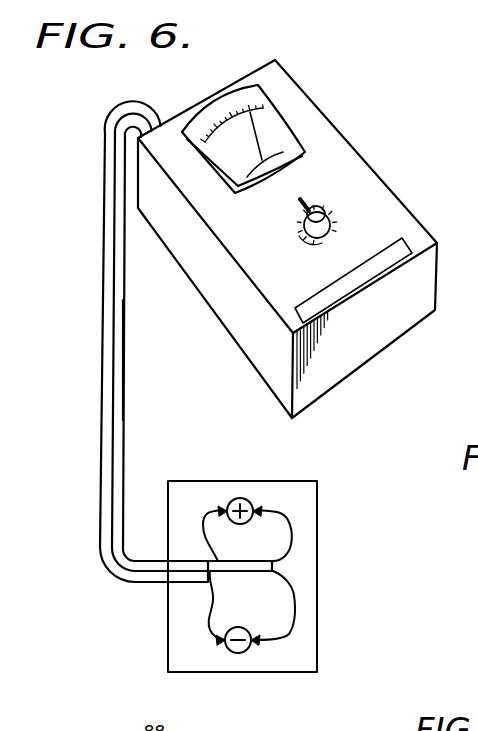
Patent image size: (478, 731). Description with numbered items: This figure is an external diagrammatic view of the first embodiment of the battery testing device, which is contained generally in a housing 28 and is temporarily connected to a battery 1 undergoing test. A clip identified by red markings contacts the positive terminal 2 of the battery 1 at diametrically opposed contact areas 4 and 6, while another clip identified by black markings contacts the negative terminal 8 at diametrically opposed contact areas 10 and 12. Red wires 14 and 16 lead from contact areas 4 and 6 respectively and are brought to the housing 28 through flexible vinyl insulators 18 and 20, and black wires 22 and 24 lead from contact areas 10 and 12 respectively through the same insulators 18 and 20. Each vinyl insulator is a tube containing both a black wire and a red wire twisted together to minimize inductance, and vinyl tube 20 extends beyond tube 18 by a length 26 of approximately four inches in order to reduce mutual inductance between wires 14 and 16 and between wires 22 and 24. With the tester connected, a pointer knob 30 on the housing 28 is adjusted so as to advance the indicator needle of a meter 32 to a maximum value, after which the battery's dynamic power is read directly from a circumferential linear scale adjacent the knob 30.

The battery 1 is at (320, 487).
The positive terminal 2 is at (240, 498).
The contact area 4 is at (221, 509).
The contact area 6 is at (258, 506).
The negative terminal 8 is at (238, 653).
The contact area 10 is at (222, 645).
The contact area 12 is at (257, 644).
The red wire 14 is at (200, 527).
The red wire 16 is at (297, 530).
The flexible vinyl insulator 18 is at (100, 405).
The flexible vinyl insulator 20 is at (125, 372).
The black wire 22 is at (217, 640).
The black wire 24 is at (293, 594).
The length 26 is at (238, 571).
The housing 28 is at (213, 310).
The pointer knob 30 is at (337, 193).
The meter 32 is at (275, 123).